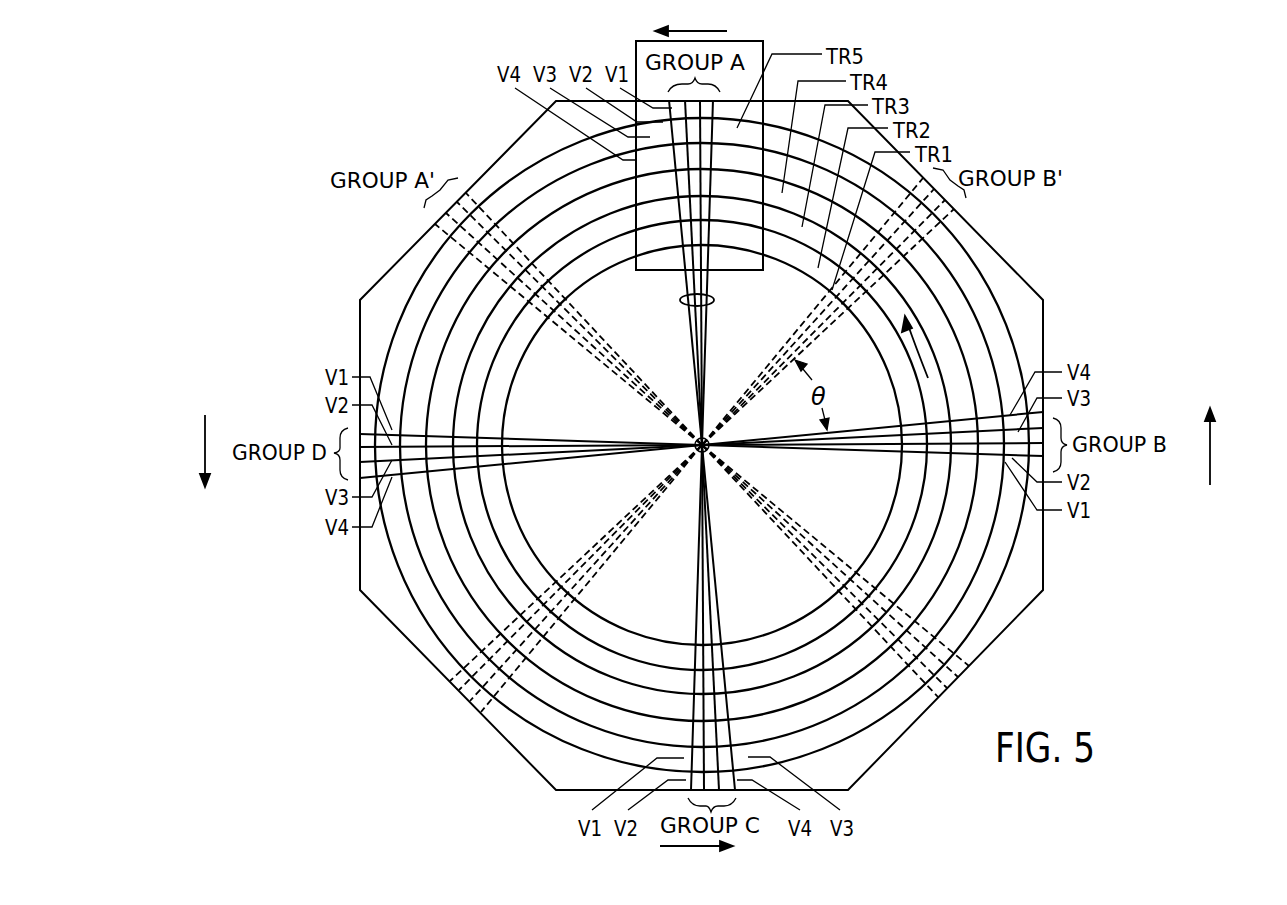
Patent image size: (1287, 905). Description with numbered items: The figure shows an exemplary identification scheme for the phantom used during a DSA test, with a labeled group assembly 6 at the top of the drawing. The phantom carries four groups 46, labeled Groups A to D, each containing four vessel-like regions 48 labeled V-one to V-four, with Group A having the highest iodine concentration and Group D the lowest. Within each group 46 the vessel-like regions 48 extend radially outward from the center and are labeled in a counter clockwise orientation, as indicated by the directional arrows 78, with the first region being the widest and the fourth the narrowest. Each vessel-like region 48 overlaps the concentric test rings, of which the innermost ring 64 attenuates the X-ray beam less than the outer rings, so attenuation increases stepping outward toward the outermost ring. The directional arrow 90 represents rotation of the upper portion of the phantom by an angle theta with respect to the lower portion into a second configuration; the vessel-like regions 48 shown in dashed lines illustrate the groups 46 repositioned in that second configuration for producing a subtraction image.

The transducer assembly 6 is at (770, 38).
The group of vessel-like regions 46 is at (708, 306).
The vessel-like region 48 is at (548, 437).
The innermost ring 64 is at (880, 548).
The directional arrow 78 is at (698, 28).
The directional arrow 90 is at (918, 352).